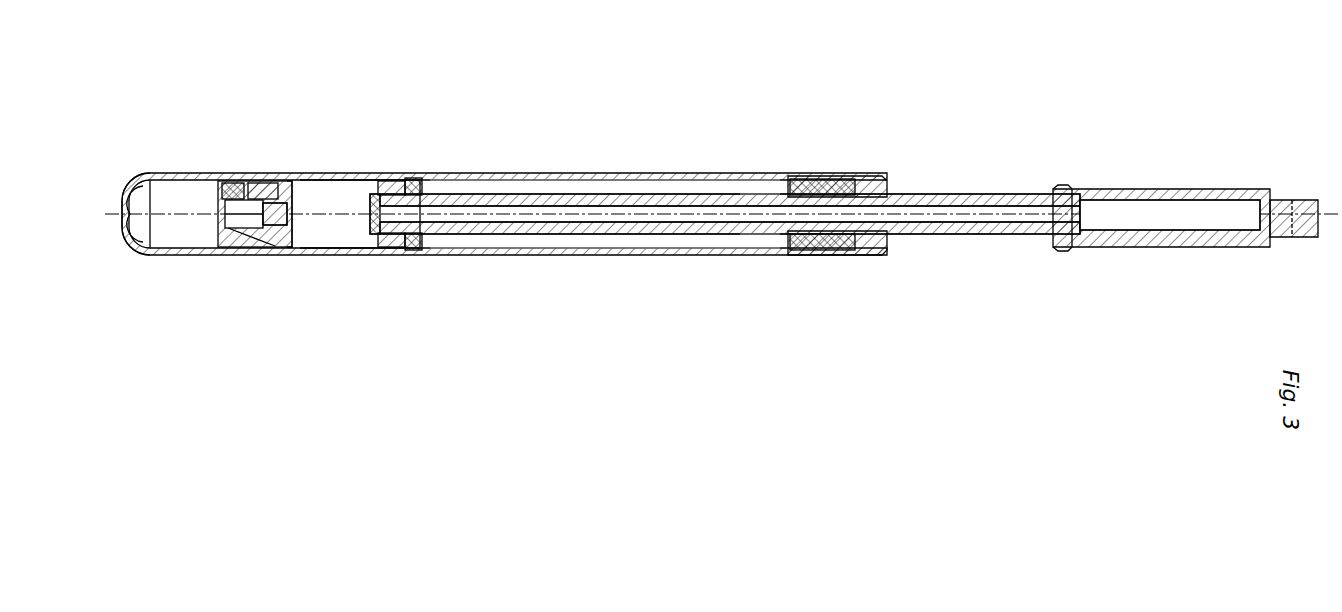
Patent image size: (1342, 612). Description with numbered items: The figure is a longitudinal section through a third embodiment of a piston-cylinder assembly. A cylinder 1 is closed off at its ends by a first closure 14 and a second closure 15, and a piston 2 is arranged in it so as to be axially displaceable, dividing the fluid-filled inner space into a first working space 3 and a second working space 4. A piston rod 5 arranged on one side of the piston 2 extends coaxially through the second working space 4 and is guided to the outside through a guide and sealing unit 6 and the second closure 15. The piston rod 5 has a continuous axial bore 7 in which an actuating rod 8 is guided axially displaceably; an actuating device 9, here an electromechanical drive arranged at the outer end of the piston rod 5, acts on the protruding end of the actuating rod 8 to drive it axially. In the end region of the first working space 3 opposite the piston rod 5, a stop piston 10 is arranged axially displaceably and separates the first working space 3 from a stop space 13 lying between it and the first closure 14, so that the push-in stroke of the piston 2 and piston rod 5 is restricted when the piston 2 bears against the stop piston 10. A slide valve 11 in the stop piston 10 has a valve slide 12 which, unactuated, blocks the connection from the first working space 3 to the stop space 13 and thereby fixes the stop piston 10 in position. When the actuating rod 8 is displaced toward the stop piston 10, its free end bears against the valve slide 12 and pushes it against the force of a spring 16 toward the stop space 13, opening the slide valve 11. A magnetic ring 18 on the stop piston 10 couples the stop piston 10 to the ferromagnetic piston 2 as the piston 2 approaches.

The cylinder 1 is at (622, 255).
The piston 2 is at (405, 247).
The first working space 3 is at (353, 247).
The second working space 4 is at (733, 240).
The piston rod 5 is at (700, 240).
The guide and sealing unit 6 is at (832, 266).
The axial bore 7 is at (757, 240).
The actuating rod 8 is at (670, 232).
The actuating device 9 is at (1170, 256).
The stop piston 10 is at (237, 182).
The slide valve 11 is at (255, 180).
The valve slide 12 is at (870, 255).
The stop space 13 is at (198, 243).
The first closure 14 is at (131, 250).
The second closure 15 is at (290, 247).
The spring 16 is at (272, 247).
The magnetic ring 18 is at (1180, 193).